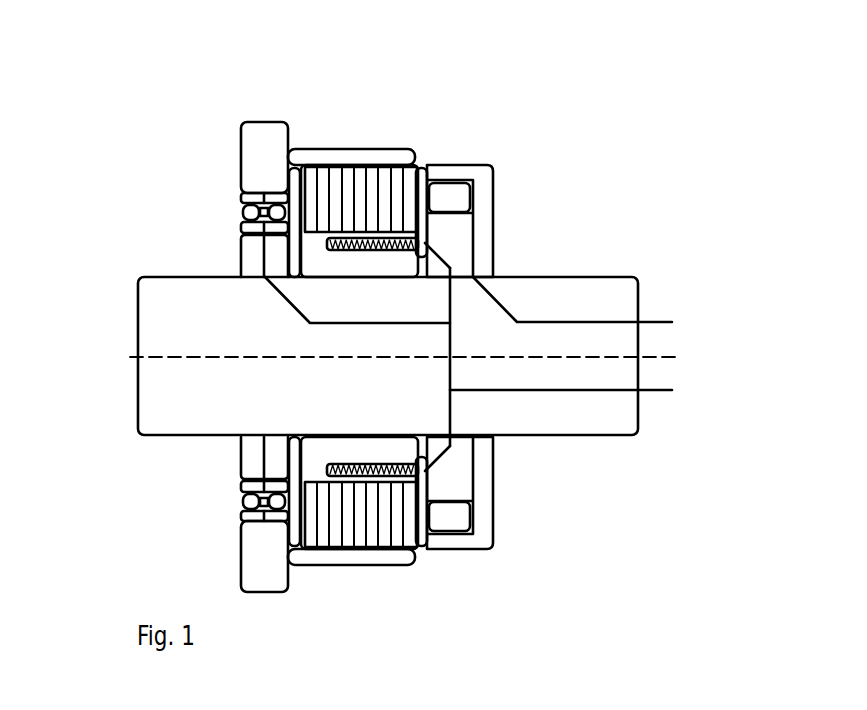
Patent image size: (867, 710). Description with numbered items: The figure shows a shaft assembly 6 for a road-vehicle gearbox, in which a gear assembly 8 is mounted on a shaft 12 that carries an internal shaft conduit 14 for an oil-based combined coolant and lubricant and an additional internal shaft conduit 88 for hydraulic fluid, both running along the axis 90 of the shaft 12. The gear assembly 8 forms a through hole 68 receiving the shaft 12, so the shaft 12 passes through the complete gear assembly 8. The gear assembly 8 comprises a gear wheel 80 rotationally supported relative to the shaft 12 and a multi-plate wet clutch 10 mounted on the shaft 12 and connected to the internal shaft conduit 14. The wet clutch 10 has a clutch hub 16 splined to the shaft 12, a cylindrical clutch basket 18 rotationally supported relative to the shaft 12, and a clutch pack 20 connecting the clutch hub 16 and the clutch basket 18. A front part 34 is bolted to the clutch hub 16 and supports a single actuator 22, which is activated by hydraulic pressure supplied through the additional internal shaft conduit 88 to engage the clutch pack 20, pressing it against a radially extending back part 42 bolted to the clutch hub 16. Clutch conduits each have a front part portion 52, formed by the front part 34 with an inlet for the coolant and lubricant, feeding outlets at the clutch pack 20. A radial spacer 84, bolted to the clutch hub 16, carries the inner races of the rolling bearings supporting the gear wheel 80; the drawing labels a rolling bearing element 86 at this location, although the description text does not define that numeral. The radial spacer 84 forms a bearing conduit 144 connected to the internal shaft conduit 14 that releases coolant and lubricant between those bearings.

The shaft assembly 6 is at (105, 100).
The gear assembly 8 is at (268, 84).
The wet clutch 10 is at (362, 128).
The shaft 12 is at (607, 290).
The internal shaft conduit 14 is at (525, 392).
The clutch hub 16 is at (327, 267).
The clutch basket 18 is at (338, 148).
The clutch pack 20 is at (386, 189).
The actuator 22 is at (452, 517).
The front part 34 is at (484, 484).
The back part 42 is at (295, 190).
The front part portion 52 is at (442, 257).
The through hole 68 is at (363, 432).
The gear wheel 80 is at (253, 548).
The radial spacer 84 is at (253, 473).
The rolling bearing 86 is at (236, 502).
The additional internal shaft conduit 88 is at (552, 322).
The axis 90 is at (580, 357).
The bearing conduit 144 is at (258, 243).